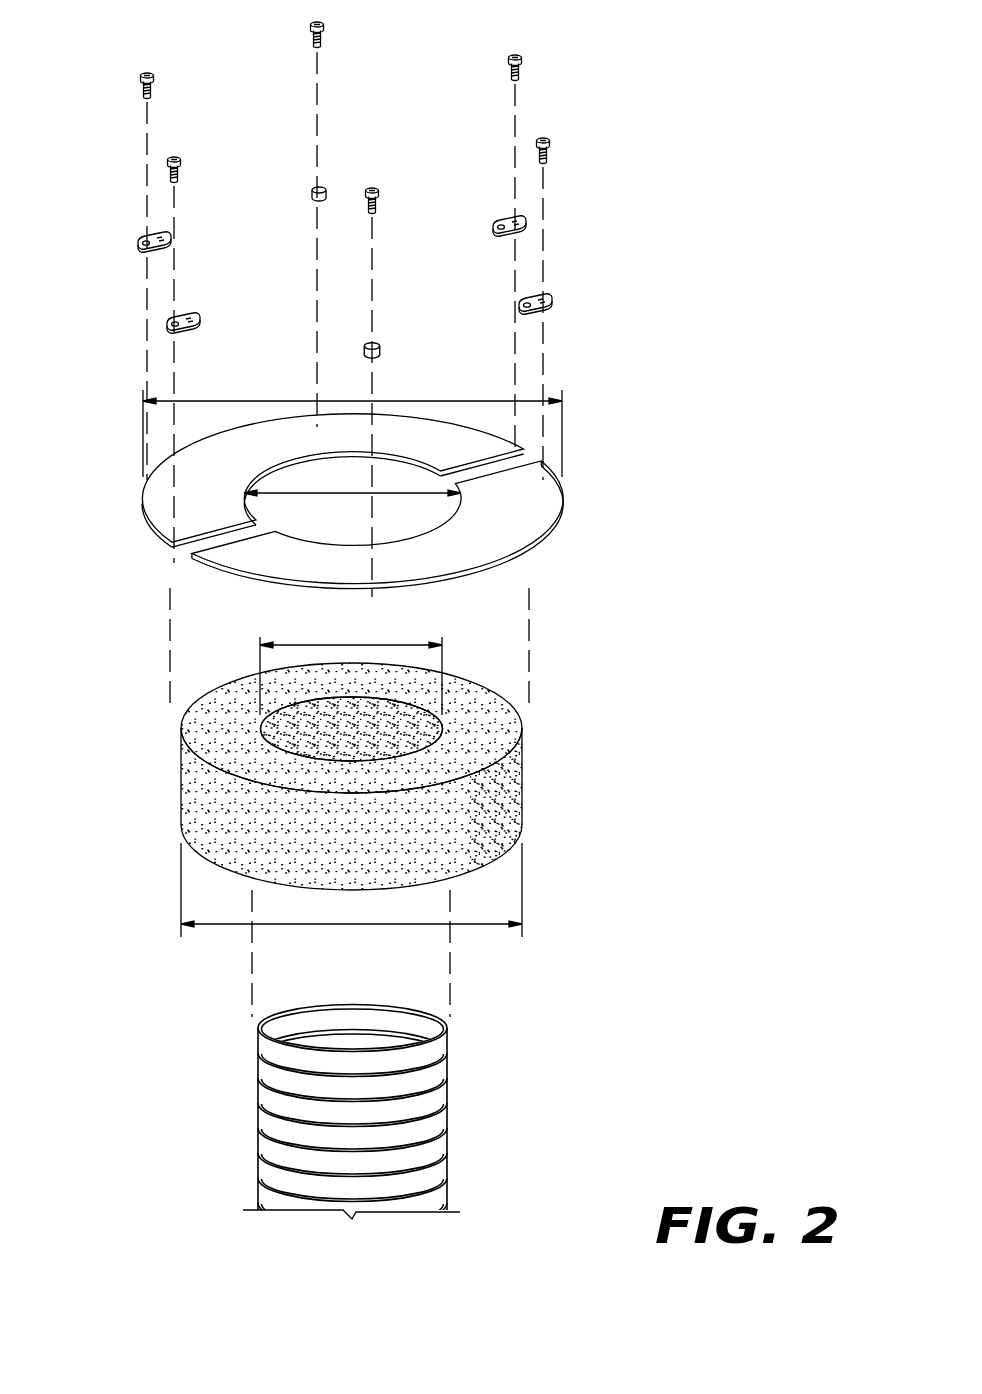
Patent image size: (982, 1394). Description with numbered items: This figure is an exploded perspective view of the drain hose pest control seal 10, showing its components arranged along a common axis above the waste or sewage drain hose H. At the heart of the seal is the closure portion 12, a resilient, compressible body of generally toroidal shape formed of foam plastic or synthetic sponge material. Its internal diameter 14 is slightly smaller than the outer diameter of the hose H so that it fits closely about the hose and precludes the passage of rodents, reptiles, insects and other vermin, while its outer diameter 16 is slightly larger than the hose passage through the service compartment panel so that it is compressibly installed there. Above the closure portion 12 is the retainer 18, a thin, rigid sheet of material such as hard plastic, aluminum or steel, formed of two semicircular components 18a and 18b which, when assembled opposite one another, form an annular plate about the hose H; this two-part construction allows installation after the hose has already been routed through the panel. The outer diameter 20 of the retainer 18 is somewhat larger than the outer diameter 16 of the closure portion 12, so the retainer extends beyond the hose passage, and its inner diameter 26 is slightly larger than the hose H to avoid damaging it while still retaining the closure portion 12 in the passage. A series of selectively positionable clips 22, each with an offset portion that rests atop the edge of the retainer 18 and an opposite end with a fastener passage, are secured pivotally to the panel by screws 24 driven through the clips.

The drain hose seal 10 is at (686, 297).
The closure portion 12 is at (182, 805).
The internal diameter 14 is at (290, 645).
The outer diameter 16 is at (235, 925).
The retainer 18 is at (294, 501).
The retainer component 18a is at (243, 468).
The retainer component 18b is at (528, 528).
The outer diameter 20 is at (193, 398).
The clips 22 is at (312, 193).
The screws 24 is at (312, 43).
The inner diameter 26 is at (323, 495).
The drain hose H is at (264, 1105).